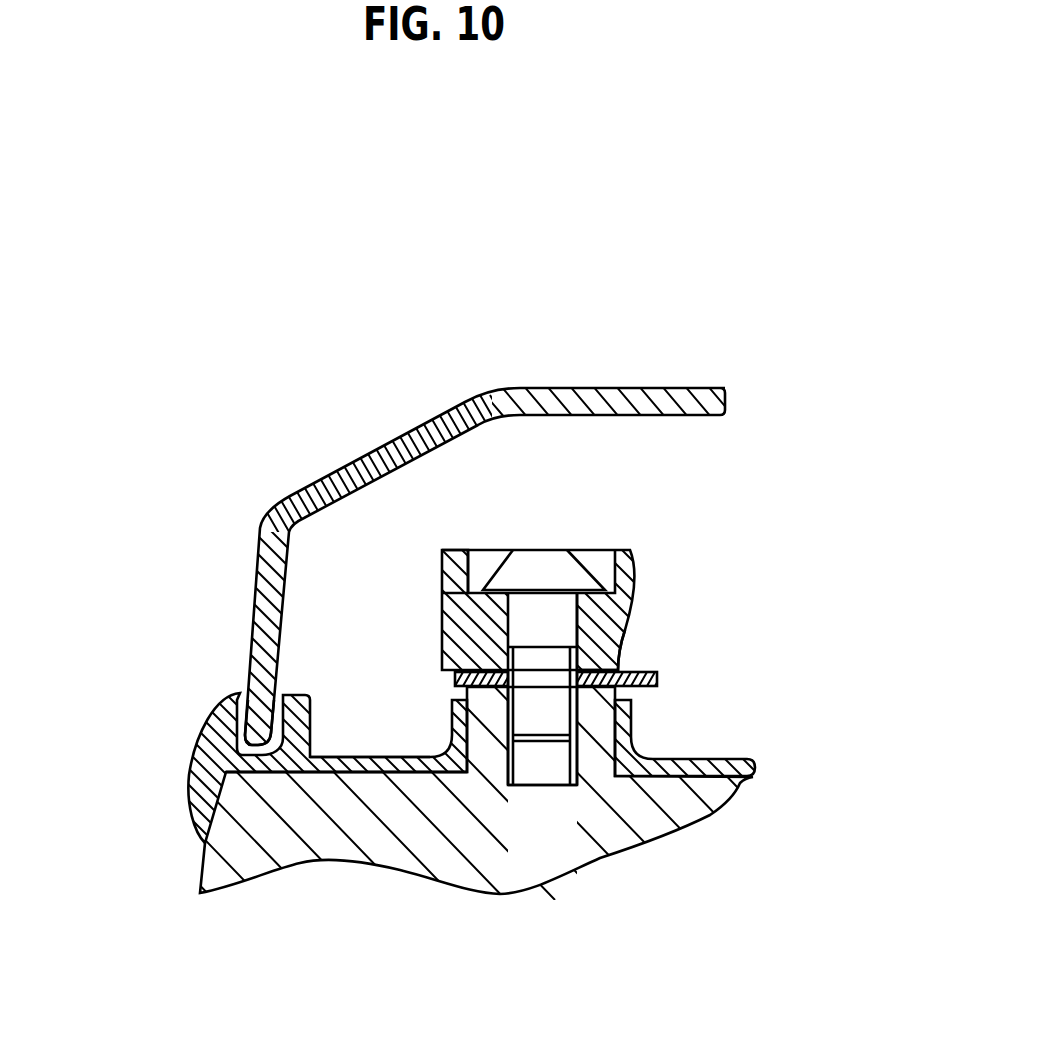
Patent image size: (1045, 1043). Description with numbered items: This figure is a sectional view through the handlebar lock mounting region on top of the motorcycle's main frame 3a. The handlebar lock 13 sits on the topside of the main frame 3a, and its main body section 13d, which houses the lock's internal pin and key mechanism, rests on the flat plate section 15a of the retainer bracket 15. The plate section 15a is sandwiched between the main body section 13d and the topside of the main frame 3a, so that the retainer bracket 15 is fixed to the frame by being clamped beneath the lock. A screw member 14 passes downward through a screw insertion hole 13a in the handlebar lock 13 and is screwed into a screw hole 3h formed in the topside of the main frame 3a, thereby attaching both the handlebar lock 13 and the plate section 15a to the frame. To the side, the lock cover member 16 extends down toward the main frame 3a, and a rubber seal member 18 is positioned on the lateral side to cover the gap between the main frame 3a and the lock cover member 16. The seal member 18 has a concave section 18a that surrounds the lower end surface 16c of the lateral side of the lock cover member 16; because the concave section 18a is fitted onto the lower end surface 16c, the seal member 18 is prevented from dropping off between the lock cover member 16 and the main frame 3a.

The main frame 3a is at (440, 847).
The screw hole 3h is at (577, 727).
The handlebar lock 13 is at (563, 482).
The screw insertion hole 13a is at (566, 612).
The main body section 13d is at (457, 553).
The screw member 14 is at (545, 560).
The retainer bracket 15 is at (691, 724).
The plate section 15a is at (633, 690).
The lock cover member 16 is at (371, 503).
The lower end surface 16c is at (237, 745).
The seal member 18 is at (324, 835).
The concave section 18a is at (340, 773).